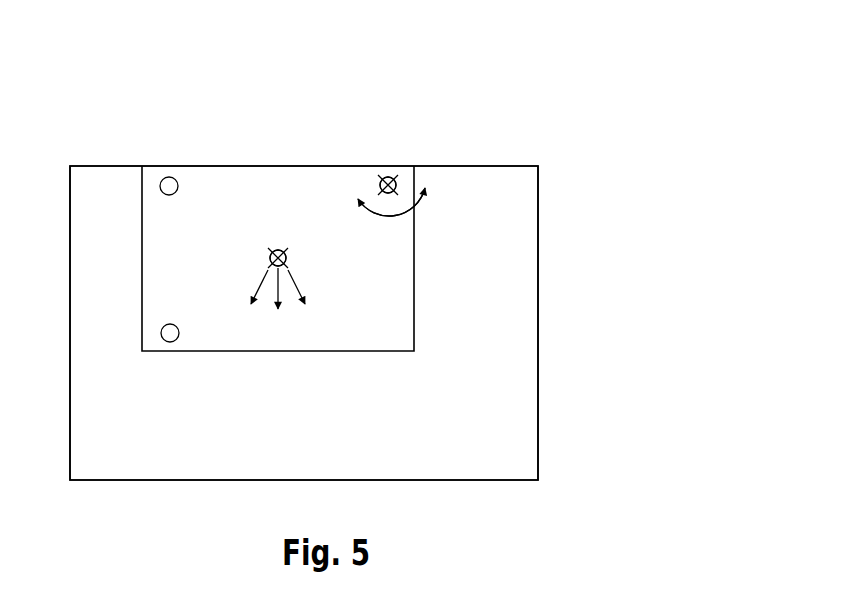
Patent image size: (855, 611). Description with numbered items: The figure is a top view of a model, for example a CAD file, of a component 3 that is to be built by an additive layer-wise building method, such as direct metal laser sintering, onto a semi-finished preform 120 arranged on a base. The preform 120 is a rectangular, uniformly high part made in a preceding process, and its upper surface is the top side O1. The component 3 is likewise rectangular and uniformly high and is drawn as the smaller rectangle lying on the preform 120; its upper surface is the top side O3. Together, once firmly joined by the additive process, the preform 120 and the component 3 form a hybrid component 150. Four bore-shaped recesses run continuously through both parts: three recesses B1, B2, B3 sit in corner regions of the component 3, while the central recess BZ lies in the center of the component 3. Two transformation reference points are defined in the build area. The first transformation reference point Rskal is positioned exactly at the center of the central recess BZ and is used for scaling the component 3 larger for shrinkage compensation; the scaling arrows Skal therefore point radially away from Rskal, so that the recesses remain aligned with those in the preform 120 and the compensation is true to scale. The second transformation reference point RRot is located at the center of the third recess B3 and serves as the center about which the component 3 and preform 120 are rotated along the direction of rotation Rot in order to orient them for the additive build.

The preform 120 is at (546, 353).
The hybrid component 150 is at (594, 155).
The top side of the preform O1 is at (489, 435).
The top side of the component O3 is at (392, 338).
The first recess B1 is at (168, 333).
The second recess B2 is at (170, 184).
The third recess B3 is at (368, 180).
The central recess BZ is at (299, 251).
The second transformation reference point RRot is at (390, 177).
The first transformation reference point Rskal is at (279, 250).
The scaling arrows Skal is at (257, 286).
The direction of rotation Rot is at (405, 220).
The component 3 is at (424, 222).